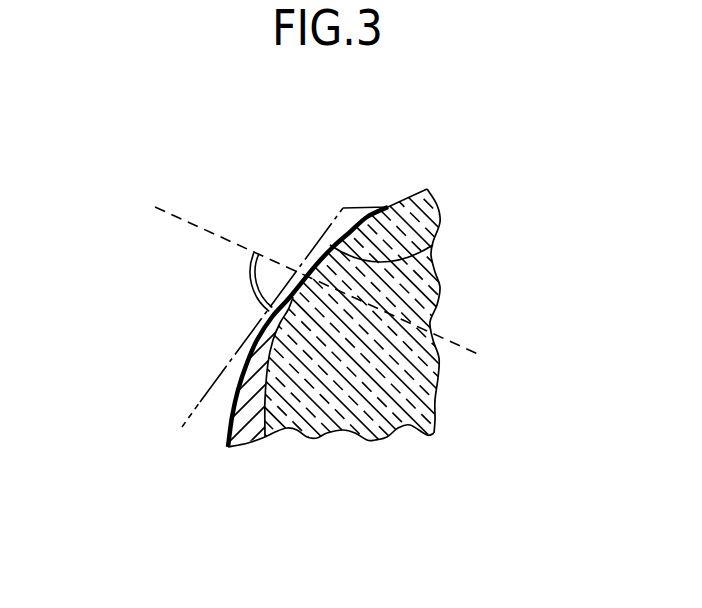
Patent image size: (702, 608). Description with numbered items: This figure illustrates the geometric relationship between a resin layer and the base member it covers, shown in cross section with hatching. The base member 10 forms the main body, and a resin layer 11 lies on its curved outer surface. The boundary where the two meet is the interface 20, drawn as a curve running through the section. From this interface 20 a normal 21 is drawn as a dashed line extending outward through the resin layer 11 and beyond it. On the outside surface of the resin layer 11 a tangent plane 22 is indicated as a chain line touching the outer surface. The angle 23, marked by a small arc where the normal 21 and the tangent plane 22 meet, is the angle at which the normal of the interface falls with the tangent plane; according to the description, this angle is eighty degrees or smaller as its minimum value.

The base member 10 is at (350, 430).
The resin layer 11 is at (363, 207).
The interface 20 is at (433, 245).
The normal 21 is at (468, 347).
The tangent plane 22 is at (199, 400).
The angle 23 is at (252, 283).